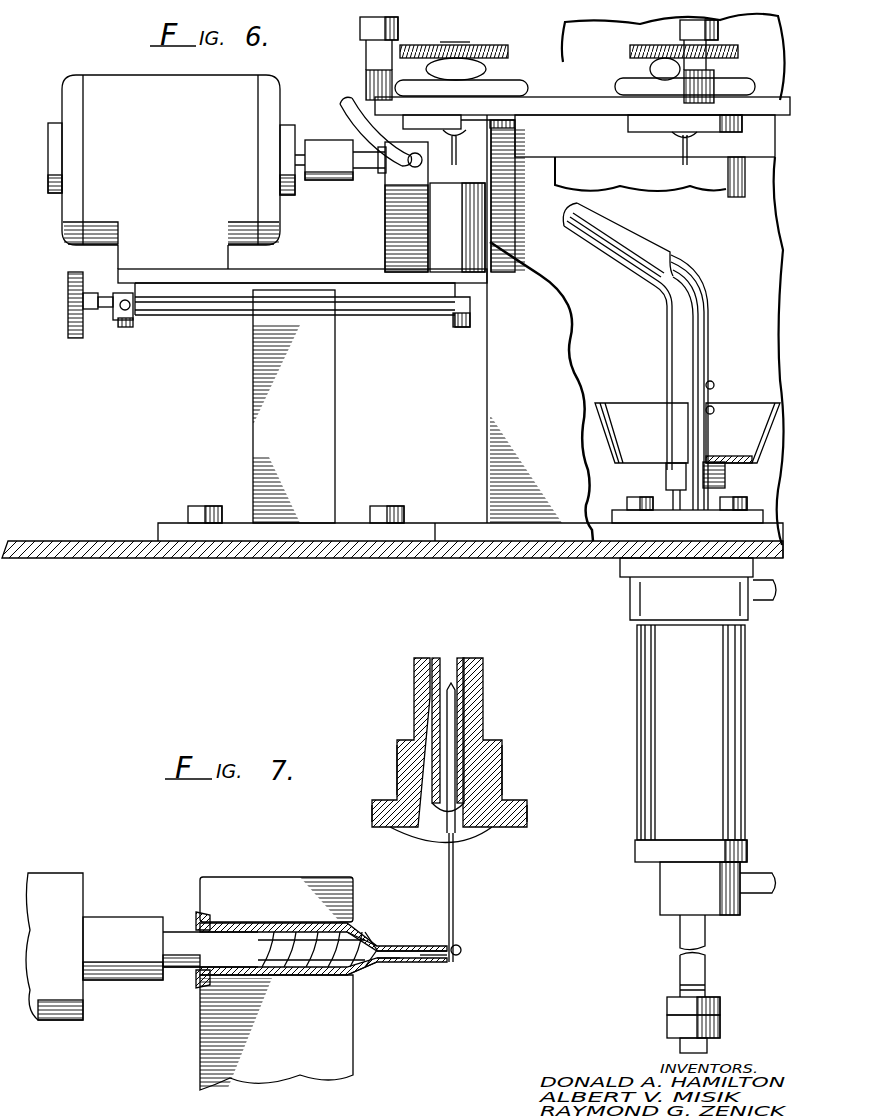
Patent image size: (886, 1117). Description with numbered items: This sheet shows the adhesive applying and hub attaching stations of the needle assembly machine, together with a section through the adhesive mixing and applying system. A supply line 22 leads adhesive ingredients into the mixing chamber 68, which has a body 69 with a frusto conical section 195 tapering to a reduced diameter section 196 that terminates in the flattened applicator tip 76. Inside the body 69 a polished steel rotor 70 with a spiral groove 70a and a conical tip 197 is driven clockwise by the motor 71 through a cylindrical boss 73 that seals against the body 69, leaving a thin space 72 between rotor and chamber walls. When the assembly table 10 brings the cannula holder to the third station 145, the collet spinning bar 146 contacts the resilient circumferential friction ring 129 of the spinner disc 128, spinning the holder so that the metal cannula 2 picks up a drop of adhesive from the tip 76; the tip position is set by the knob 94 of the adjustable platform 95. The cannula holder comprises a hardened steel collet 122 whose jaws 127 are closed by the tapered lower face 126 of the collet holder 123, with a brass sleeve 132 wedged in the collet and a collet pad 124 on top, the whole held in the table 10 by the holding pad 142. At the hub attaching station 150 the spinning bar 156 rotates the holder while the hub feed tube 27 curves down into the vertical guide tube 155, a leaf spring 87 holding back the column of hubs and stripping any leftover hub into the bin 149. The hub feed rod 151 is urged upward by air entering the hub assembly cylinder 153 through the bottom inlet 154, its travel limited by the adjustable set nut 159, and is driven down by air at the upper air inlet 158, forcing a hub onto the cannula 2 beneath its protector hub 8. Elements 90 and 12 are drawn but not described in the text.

In FIG. 6, the motor 71 is at (108, 84).
In FIG. 6, the protector hub 8 is at (342, 160).
In FIG. 6, the supply line 22 is at (342, 112).
In FIG. 6, the mixing chamber 68 is at (382, 176).
In FIG. 7, the mixing chamber 68 is at (237, 915).
In FIG. 6, the metal cannula 2 is at (683, 150).
In FIG. 7, the metal cannula 2 is at (457, 875).
In FIG. 6, the applicator tip 76 is at (450, 166).
In FIG. 7, the applicator tip 76 is at (427, 963).
In FIG. 6, the support column 90 is at (450, 235).
In FIG. 6, the assembly table 10 is at (577, 112).
In FIG. 6, the collet spinning bar 146 is at (378, 54).
In FIG. 6, the collet pad 124 is at (498, 53).
In FIG. 6, the third station 145 is at (418, 36).
In FIG. 6, the spinner disc 128 is at (503, 74).
In FIG. 6, the resilient circumferential friction ring 129 is at (534, 88).
In FIG. 6, the hub attaching station 150 is at (622, 70).
In FIG. 6, the spinning bar 156 is at (678, 30).
In FIG. 6, the holding pad 142 is at (648, 130).
In FIG. 6, the hub feed tube 27 is at (638, 240).
In FIG. 6, the leaf spring 87 is at (708, 294).
In FIG. 6, the vertical guide tube 155 is at (676, 353).
In FIG. 6, the bin 149 is at (766, 384).
In FIG. 6, the base plate 12 is at (87, 540).
In FIG. 6, the adjustable platform 95 is at (186, 277).
In FIG. 6, the knob 94 is at (70, 326).
In FIG. 6, the upper air inlet 158 is at (760, 600).
In FIG. 6, the hub assembly cylinder 153 is at (666, 706).
In FIG. 6, the bottom inlet 154 is at (758, 878).
In FIG. 6, the hub feed rod 151 is at (688, 934).
In FIG. 6, the adjustable set nut 159 is at (680, 1010).
In FIG. 7, the cylindrical boss 73 is at (183, 957).
In FIG. 7, the body 69 is at (337, 927).
In FIG. 7, the polished steel rotor 70 is at (318, 942).
In FIG. 7, the spiral groove 70a is at (340, 948).
In FIG. 7, the frusto conical section 195 is at (342, 931).
In FIG. 7, the reduced diameter section 196 is at (376, 947).
In FIG. 7, the conical tip 197 is at (358, 963).
In FIG. 7, the space 72 is at (374, 961).
In FIG. 7, the hardened steel collet 122 is at (472, 690).
In FIG. 7, the collet holder 123 is at (490, 760).
In FIG. 7, the tapered lower face 126 is at (505, 815).
In FIG. 7, the jaws 127 is at (428, 832).
In FIG. 7, the brass sleeve 132 is at (460, 660).